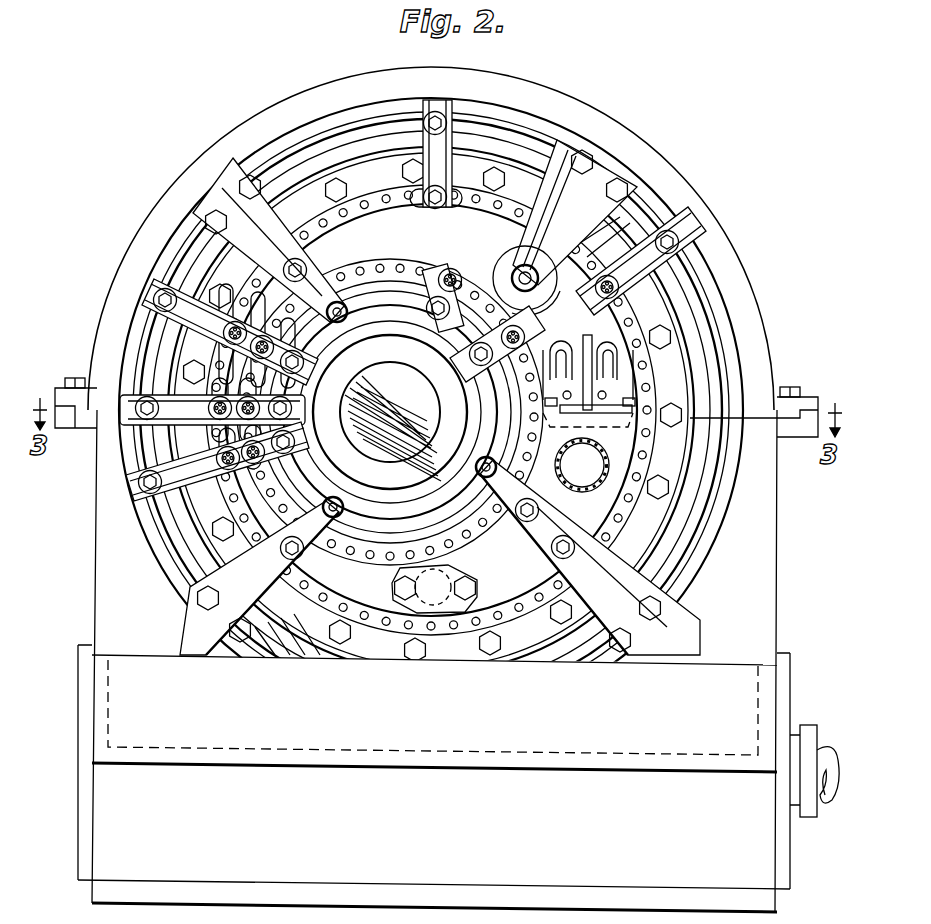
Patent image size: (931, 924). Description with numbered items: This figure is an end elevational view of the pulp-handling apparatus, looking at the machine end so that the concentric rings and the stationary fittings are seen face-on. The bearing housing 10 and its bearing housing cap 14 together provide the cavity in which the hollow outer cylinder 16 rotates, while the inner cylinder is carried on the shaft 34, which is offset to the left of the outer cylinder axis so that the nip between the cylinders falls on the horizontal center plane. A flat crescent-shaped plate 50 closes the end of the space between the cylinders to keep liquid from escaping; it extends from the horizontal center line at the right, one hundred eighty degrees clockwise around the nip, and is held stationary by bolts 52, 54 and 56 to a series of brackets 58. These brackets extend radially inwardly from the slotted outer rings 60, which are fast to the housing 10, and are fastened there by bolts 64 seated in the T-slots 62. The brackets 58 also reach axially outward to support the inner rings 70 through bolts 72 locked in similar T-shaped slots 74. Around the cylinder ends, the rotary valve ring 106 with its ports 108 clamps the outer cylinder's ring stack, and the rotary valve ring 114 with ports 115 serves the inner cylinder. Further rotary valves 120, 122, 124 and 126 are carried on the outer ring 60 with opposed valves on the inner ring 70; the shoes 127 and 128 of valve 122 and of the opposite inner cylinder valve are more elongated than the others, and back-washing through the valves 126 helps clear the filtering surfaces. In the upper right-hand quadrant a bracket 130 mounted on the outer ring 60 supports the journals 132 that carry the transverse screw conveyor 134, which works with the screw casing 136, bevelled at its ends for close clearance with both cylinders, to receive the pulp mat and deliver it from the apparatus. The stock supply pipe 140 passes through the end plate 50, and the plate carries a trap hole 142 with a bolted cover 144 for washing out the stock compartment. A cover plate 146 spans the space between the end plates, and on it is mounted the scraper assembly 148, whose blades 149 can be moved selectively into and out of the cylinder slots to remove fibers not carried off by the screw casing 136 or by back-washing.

The bearing housing 10 is at (763, 553).
The bearing housing cap 14 is at (810, 400).
The outer cylinder 16 is at (503, 218).
The shaft 34 is at (417, 380).
The crescent-shaped plate 50 is at (452, 586).
The bolt 52 is at (540, 510).
The bolt 54 is at (308, 560).
The bolt 56 is at (316, 259).
The bracket 58 is at (662, 603).
The outer ring 60 is at (695, 583).
The T-slot 62 is at (705, 522).
The bolt 64 is at (622, 641).
The inner ring 70 is at (415, 283).
The bolt 72 is at (347, 500).
The T-shaped slot 74 is at (371, 303).
The rotary valve ring 106 is at (720, 376).
The port 108 is at (648, 468).
The rotary valve ring 114 is at (540, 450).
The port 115 is at (397, 558).
The rotary valve 120 is at (222, 473).
The rotary valve 122 is at (223, 328).
The rotary valve 124 is at (438, 203).
The rotary valve 126 is at (553, 315).
The shoe 127 is at (254, 302).
The shoe 128 is at (283, 282).
The bracket 130 is at (590, 152).
The journal 132 is at (540, 238).
The screw conveyor 134 is at (510, 270).
The screw casing 136 is at (572, 337).
The stock supply pipe 140 is at (582, 465).
The trap hole 142 is at (457, 565).
The bolted cover 144 is at (470, 603).
The cover plate 146 is at (613, 428).
The scraper assembly 148 is at (677, 383).
The blade 149 is at (625, 333).